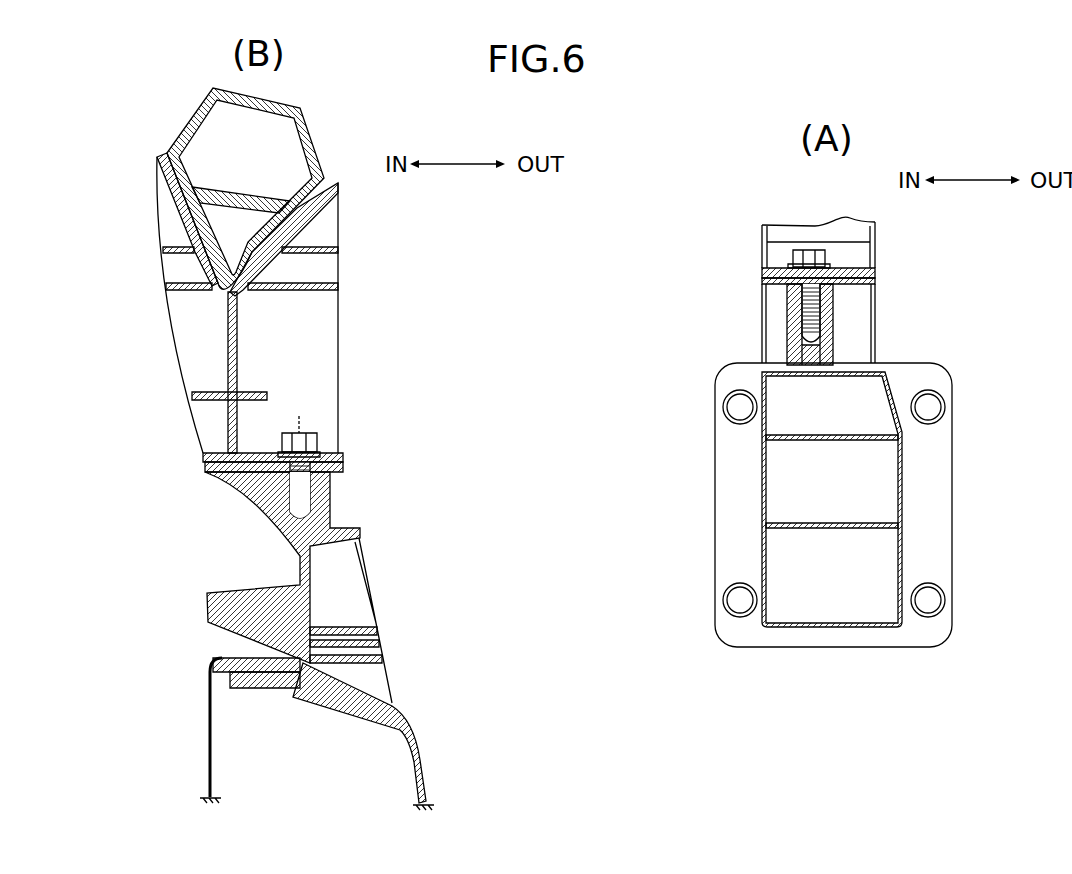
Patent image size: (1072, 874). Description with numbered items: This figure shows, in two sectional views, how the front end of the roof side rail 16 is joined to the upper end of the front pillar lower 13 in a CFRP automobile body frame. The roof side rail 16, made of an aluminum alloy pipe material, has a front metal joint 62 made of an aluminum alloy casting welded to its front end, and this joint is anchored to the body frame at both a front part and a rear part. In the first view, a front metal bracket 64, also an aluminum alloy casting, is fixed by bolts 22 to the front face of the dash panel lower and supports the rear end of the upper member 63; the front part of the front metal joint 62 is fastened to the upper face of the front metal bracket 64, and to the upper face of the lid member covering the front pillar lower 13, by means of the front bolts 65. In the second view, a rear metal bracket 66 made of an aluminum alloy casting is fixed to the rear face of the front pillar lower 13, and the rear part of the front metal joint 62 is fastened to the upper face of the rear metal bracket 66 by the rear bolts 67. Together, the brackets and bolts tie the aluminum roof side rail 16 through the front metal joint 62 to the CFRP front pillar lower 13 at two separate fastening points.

The front pillar lower 13 is at (428, 762).
The roof side rail 16 is at (307, 118).
The bolts 22 is at (735, 409).
The front metal joint 62 is at (322, 340).
The upper member 63 is at (903, 494).
The front metal bracket 64 is at (863, 322).
The front bolts 65 is at (808, 243).
The rear metal bracket 66 is at (345, 528).
The rear bolts 67 is at (310, 432).